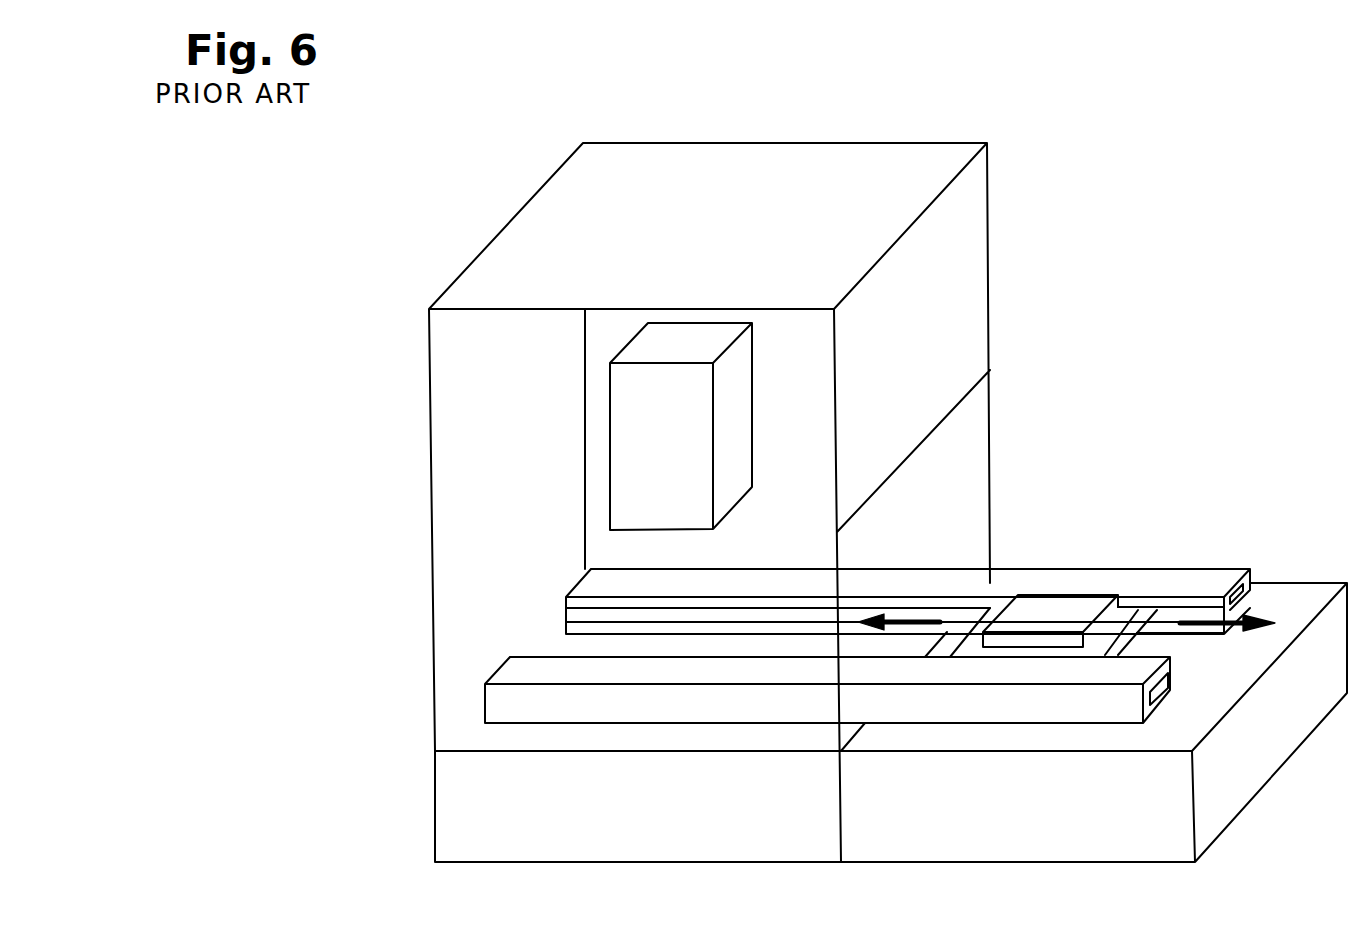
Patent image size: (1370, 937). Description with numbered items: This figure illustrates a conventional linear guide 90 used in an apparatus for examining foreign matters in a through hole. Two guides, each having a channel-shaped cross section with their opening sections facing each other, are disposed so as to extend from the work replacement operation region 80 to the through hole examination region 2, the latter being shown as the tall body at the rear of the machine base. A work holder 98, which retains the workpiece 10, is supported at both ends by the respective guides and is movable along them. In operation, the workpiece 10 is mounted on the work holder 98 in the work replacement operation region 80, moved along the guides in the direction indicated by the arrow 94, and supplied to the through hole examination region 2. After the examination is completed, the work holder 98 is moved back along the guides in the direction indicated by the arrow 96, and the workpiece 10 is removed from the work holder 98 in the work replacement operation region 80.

The through hole examination region 2 is at (455, 566).
The work replacement operation region 80 is at (1175, 838).
The linear guide 90 is at (1092, 541).
The workpiece 10 is at (1037, 608).
The work holder 98 is at (1130, 607).
The arrow 94 is at (912, 610).
The arrow 96 is at (1262, 612).